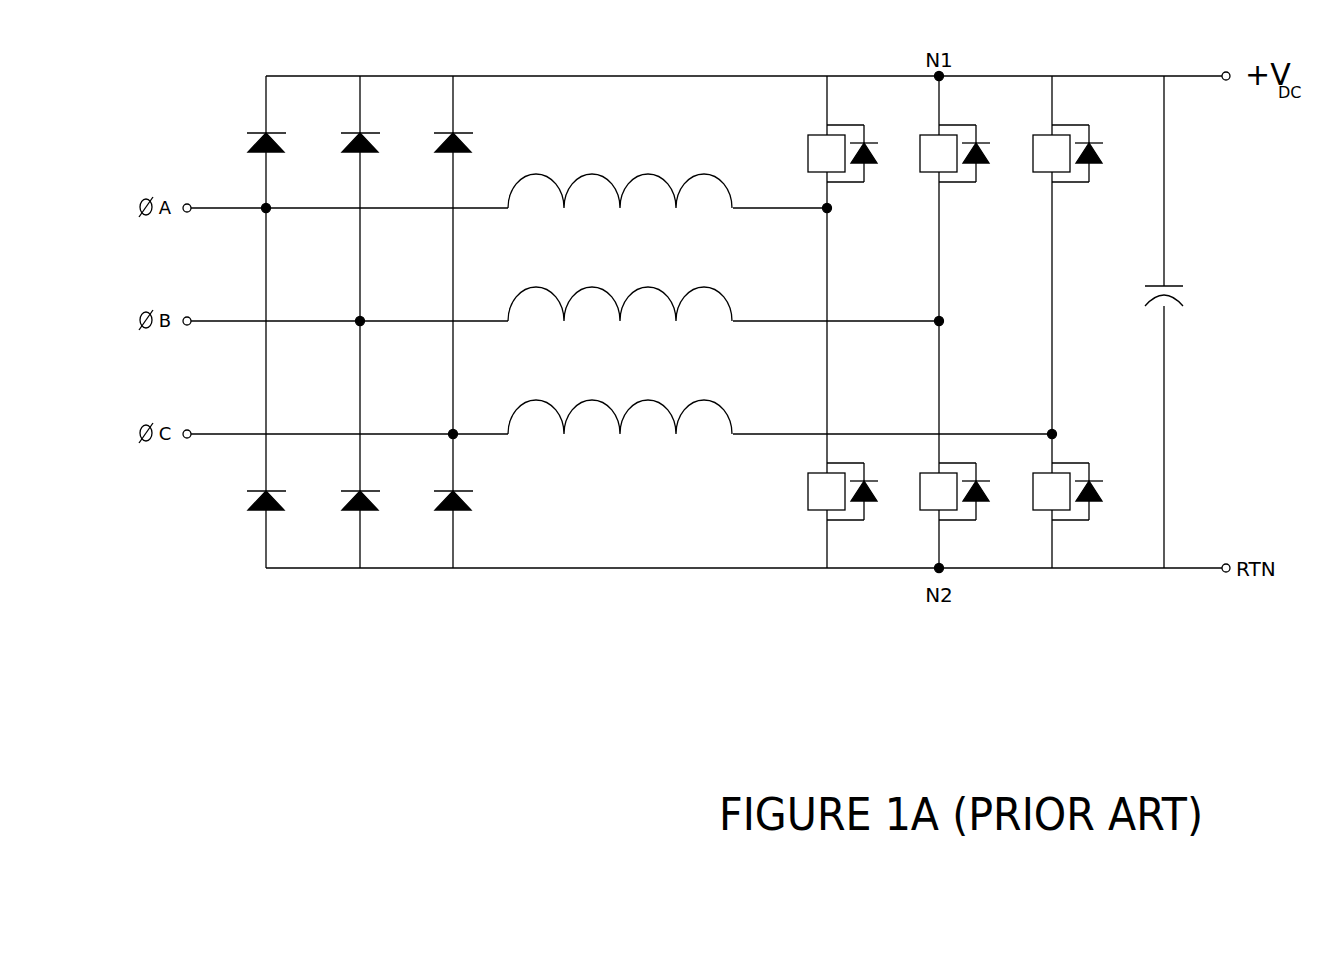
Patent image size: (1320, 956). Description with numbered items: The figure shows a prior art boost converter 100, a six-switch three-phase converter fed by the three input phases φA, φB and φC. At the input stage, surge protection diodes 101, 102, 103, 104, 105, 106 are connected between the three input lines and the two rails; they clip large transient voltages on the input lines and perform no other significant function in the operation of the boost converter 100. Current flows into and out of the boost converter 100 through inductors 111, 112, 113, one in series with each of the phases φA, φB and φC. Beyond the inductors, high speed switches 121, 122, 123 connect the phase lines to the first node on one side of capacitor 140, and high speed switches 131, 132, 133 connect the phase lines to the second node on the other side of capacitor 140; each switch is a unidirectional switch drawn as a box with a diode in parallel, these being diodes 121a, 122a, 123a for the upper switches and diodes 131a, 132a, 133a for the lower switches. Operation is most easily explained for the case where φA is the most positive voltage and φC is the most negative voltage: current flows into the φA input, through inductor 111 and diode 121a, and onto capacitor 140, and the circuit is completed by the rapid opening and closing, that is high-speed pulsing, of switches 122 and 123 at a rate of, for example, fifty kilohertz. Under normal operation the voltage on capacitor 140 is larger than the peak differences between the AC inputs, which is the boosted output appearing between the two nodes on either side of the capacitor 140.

The boost converter 100 is at (430, 669).
The surge protection diode 101 is at (293, 159).
The surge protection diode 102 is at (387, 159).
The surge protection diode 103 is at (481, 126).
The surge protection diode 104 is at (293, 518).
The surge protection diode 105 is at (387, 518).
The surge protection diode 106 is at (480, 518).
The inductor 111 is at (593, 164).
The inductor 112 is at (593, 277).
The inductor 113 is at (593, 390).
The switch 121 is at (798, 153).
The switch 122 is at (911, 180).
The switch 123 is at (1024, 180).
The diode 121a is at (877, 120).
The diode 122a is at (989, 120).
The diode 123a is at (1102, 120).
The switch 131 is at (798, 491).
The switch 132 is at (911, 518).
The switch 133 is at (1024, 518).
The diode 131a is at (877, 458).
The diode 132a is at (989, 458).
The diode 133a is at (1102, 458).
The capacitor 140 is at (1194, 274).